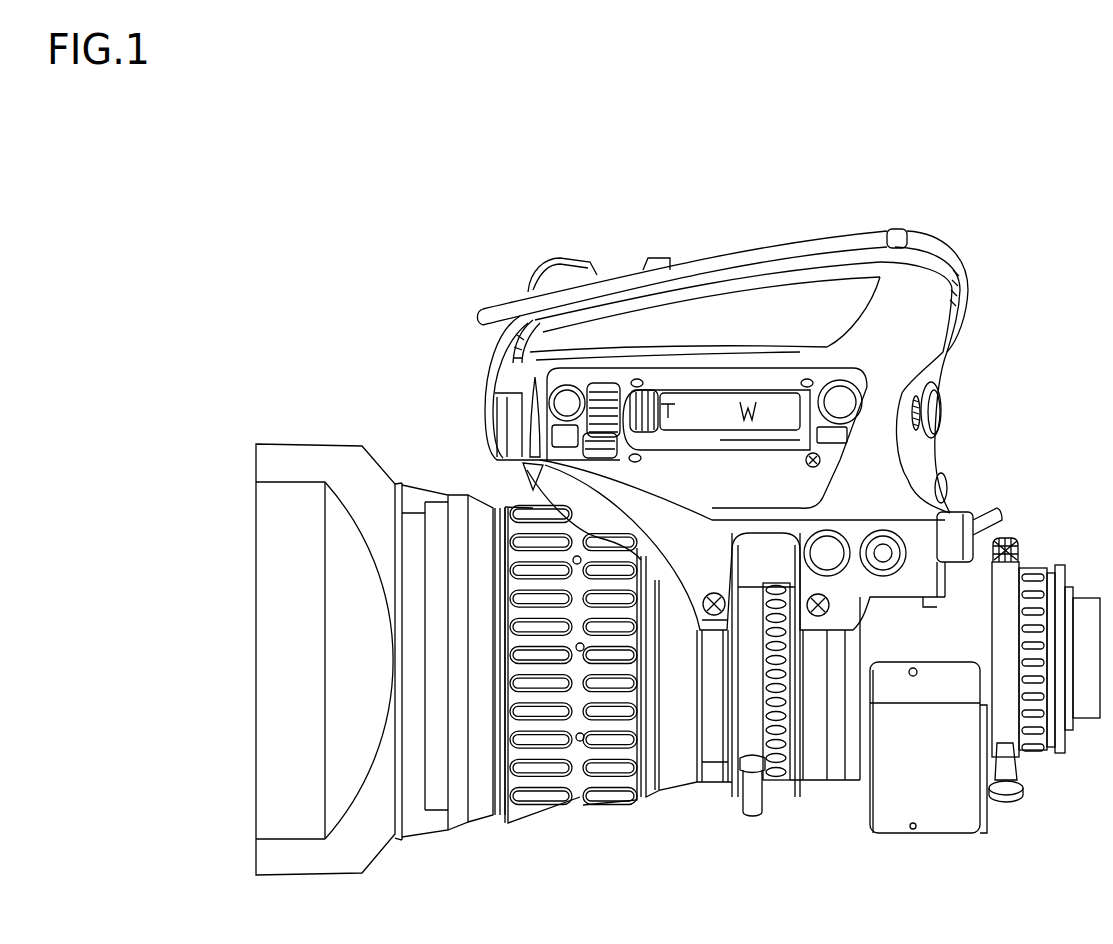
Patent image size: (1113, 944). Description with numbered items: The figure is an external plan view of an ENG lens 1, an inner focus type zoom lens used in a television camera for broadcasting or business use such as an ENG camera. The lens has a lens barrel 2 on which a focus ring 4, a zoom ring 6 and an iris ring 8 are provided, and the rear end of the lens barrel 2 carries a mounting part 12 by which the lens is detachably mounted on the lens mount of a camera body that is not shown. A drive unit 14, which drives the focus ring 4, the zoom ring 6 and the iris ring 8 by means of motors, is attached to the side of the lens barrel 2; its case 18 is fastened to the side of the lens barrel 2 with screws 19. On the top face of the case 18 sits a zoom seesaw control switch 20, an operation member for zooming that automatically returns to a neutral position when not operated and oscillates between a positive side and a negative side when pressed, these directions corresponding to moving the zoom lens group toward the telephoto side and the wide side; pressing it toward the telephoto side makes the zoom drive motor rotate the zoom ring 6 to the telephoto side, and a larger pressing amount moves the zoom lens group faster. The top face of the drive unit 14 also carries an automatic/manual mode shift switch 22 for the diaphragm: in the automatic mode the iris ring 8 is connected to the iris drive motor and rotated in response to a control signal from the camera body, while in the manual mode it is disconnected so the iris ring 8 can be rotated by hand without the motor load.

The ENG lens 1 is at (1031, 299).
The lens barrel 2 is at (670, 813).
The focus ring 4 is at (580, 790).
The zoom ring 6 is at (777, 780).
The iris ring 8 is at (838, 773).
The mounting part 12 is at (1034, 759).
The drive unit 14 is at (956, 452).
The case 18 is at (893, 363).
The screws 19 is at (714, 595).
The zoom seesaw control switch 20 is at (715, 400).
The automatic/manual mode shift switch 22 is at (608, 400).